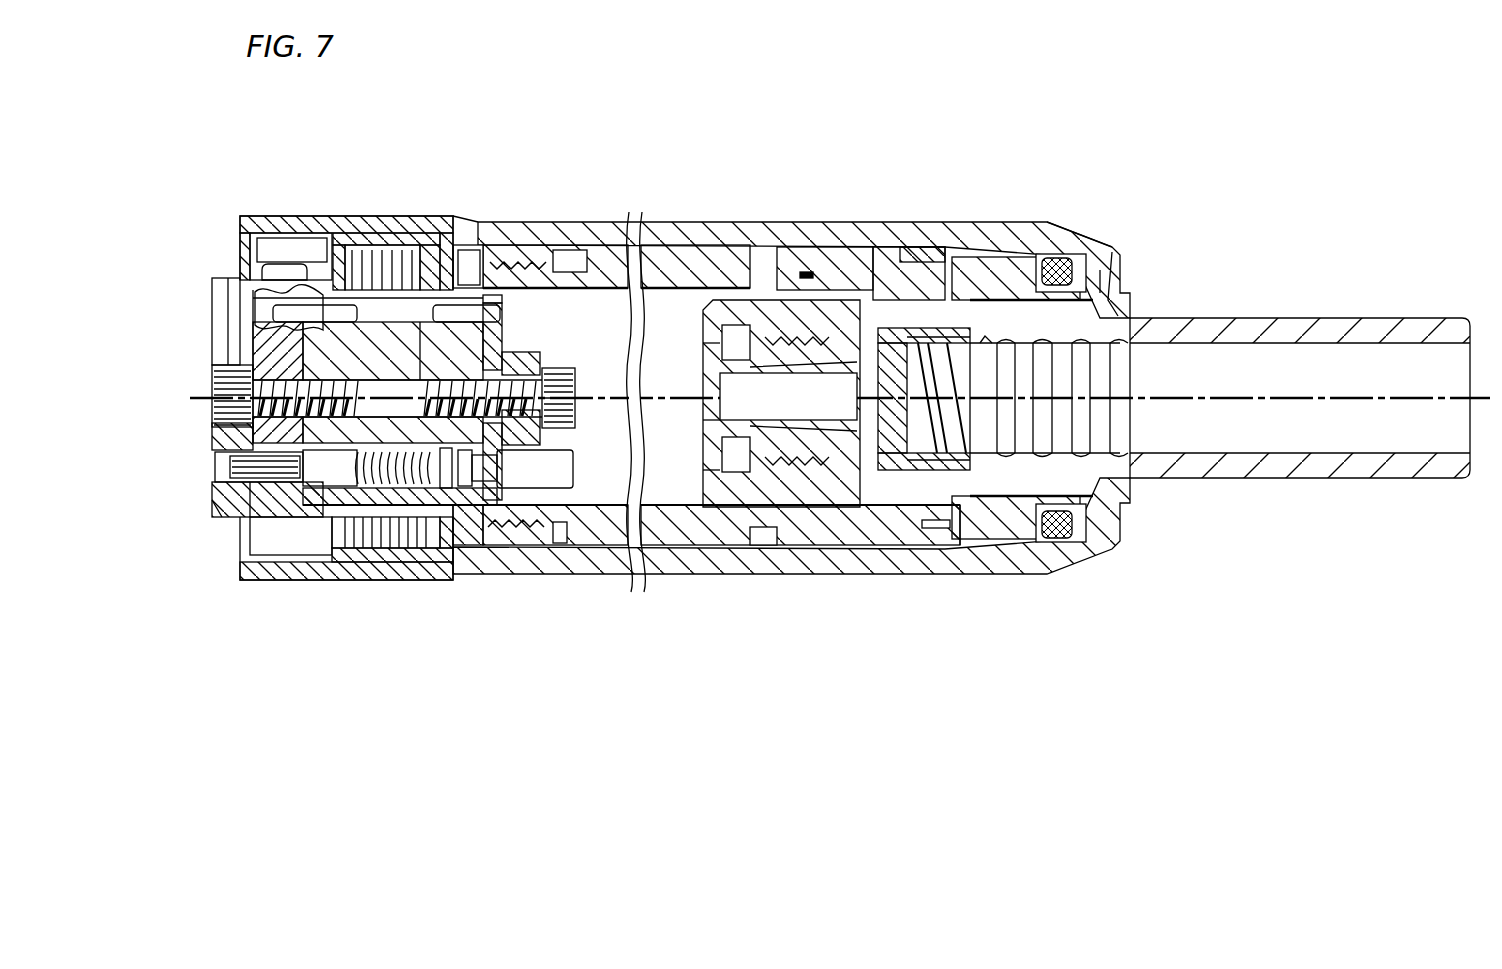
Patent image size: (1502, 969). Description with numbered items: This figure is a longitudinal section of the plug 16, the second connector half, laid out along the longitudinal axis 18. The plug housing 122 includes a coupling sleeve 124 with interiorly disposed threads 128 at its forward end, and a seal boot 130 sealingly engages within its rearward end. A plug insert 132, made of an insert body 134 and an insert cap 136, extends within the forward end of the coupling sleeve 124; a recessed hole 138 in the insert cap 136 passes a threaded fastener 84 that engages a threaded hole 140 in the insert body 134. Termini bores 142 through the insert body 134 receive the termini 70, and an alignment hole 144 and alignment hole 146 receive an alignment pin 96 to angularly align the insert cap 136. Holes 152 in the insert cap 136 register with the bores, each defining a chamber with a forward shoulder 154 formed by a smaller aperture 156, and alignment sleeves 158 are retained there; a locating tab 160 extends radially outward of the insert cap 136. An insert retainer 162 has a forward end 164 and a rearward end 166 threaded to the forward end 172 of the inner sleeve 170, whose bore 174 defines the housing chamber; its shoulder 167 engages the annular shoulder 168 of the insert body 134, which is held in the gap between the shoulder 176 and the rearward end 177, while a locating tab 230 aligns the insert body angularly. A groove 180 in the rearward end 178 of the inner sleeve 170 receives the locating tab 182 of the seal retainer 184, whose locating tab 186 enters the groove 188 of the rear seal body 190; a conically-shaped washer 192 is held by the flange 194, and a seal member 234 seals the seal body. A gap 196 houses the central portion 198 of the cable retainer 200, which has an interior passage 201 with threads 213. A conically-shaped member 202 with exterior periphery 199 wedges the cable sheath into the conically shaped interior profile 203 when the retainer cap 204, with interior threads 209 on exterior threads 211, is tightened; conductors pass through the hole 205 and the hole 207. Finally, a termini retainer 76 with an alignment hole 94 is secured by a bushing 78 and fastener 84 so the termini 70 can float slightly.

The plug 16 is at (1160, 246).
The longitudinal axis 18 is at (1370, 395).
The termini 70 is at (570, 480).
The termini retainer 76 is at (510, 337).
The terminus retainer bushing 78 is at (537, 433).
The threaded fastener 84 is at (222, 412).
The alignment hole 94 is at (500, 316).
The alignment pin 96 is at (330, 298).
The plug housing 122 is at (723, 212).
The coupling sleeve 124 is at (1012, 232).
The threads 128 is at (397, 258).
The seal boot 130 is at (1282, 322).
The plug insert 132 is at (266, 520).
The insert body 134 is at (367, 255).
The insert cap 136 is at (252, 282).
The recessed hole 138 is at (222, 372).
The threaded hole 140 is at (384, 385).
The termini bores 142 is at (380, 540).
The alignment hole 144 is at (347, 255).
The alignment hole 146 is at (262, 326).
The holes 152 is at (242, 495).
The forward shoulder 154 is at (225, 508).
The aperture 156 is at (213, 458).
The alignment sleeves 158 is at (283, 530).
The locating tab 160 is at (272, 258).
The insert retainer 162 is at (545, 262).
The forward end 164 is at (430, 255).
The rearward end 166 is at (615, 265).
The shoulder 167 is at (478, 283).
The annular shoulder 168 is at (475, 525).
The inner sleeve 170 is at (634, 215).
The forward end 172 is at (547, 518).
The bore 174 is at (652, 285).
The shoulder 176 is at (466, 482).
The rearward end 177 is at (465, 520).
The rearward end 178 is at (832, 520).
The groove 180 is at (785, 270).
The locating tab 182 is at (807, 272).
The seal retainer 184 is at (912, 262).
The locating tab 186 is at (930, 522).
The groove 188 is at (962, 520).
The rear seal body 190 is at (965, 330).
The conically-shaped washer 192 is at (1085, 275).
The flange 194 is at (1113, 290).
The gap 196 is at (848, 290).
The central portion 198 is at (867, 495).
The exterior periphery 199 is at (828, 345).
The cable retainer 200 is at (968, 298).
The interior passage 201 is at (1040, 345).
The conically-shaped member 202 is at (722, 440).
The conically shaped interior profile 203 is at (853, 397).
The retainer cap 204 is at (717, 478).
The hole 205 is at (722, 380).
The hole 207 is at (720, 425).
The interior threads 209 is at (725, 342).
The exterior threads 211 is at (745, 290).
The threads 213 is at (993, 345).
The locating tab 230 is at (500, 262).
The seal member 234 is at (1062, 540).